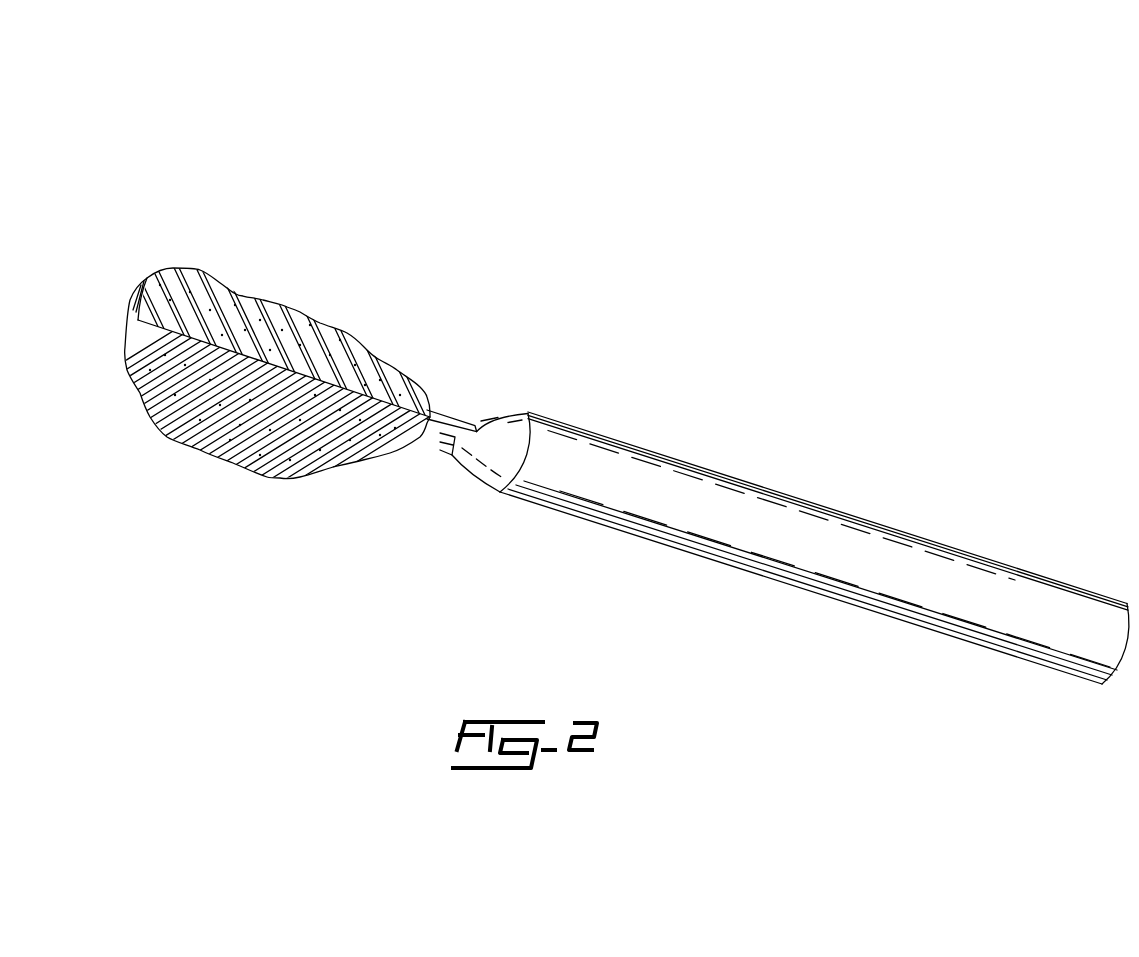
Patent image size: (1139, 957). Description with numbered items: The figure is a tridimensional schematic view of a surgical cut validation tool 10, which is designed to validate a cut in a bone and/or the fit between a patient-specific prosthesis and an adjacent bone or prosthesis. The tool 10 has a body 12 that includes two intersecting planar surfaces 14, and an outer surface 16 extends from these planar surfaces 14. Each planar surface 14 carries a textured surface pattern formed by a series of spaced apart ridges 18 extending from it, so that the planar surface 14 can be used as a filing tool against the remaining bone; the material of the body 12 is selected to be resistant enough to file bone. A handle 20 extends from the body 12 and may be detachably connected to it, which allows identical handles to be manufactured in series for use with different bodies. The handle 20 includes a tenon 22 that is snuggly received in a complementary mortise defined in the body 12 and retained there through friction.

The surgical cut validation tool 10 is at (197, 173).
The body 12 is at (146, 287).
The planar surfaces 14 is at (333, 390).
The outer surface 16 is at (133, 320).
The ridges 18 is at (337, 456).
The handle 20 is at (735, 510).
The tenon 22 is at (448, 412).